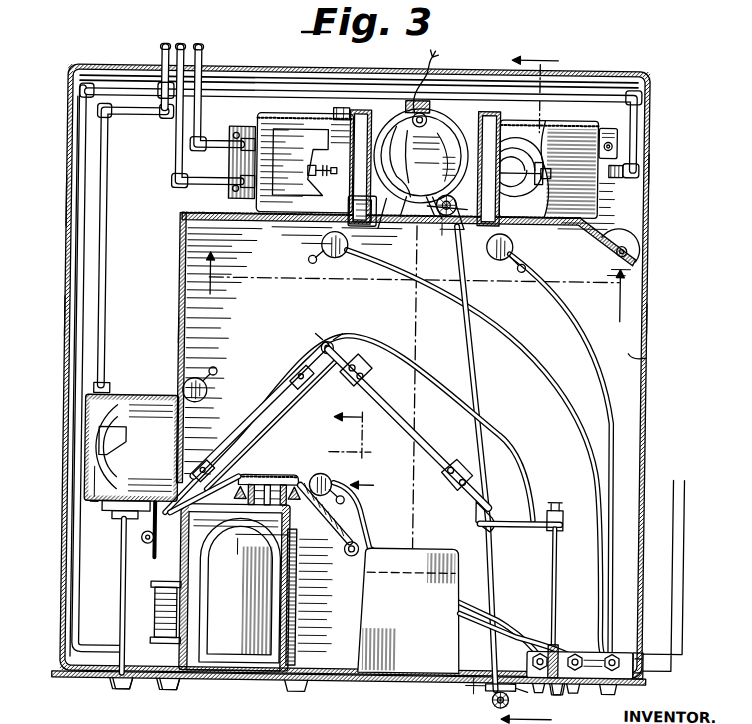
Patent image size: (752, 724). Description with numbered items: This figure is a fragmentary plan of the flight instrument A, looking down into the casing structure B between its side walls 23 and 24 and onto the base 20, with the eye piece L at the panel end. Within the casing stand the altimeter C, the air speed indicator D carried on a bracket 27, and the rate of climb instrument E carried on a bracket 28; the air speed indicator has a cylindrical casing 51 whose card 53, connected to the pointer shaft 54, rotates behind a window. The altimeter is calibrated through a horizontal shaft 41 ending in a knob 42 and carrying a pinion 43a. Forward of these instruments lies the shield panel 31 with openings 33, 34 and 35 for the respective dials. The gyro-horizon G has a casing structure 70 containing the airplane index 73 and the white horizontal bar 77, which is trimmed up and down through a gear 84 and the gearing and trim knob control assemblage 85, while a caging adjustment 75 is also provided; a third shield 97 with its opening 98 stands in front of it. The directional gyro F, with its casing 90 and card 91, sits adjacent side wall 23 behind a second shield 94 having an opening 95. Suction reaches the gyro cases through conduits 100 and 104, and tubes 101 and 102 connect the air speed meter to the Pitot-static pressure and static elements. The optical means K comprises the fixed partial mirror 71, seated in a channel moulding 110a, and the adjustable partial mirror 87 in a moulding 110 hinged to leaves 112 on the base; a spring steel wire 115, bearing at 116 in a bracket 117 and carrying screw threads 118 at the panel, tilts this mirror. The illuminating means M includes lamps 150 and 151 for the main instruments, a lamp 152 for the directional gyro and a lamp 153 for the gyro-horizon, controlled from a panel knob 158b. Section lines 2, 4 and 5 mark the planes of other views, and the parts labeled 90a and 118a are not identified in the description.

The flight instrument A is at (60, 81).
The casing structure B is at (60, 206).
The altimeter C is at (426, 129).
The air speed indicator D is at (279, 127).
The rate of climb instrument E is at (553, 125).
The directional gyro F is at (84, 413).
The gyro-horizon G is at (245, 655).
The optical means K is at (378, 401).
The eye piece L is at (391, 660).
The illuminating means M is at (595, 252).
The section line 2 is at (413, 297).
The section line 4 is at (538, 387).
The section line 5 is at (373, 387).
The base 20 is at (646, 354).
The side wall 23 is at (59, 322).
The side wall 24 is at (647, 318).
The bracket 27 is at (230, 162).
The bracket 28 is at (614, 134).
The shield panel 31 is at (262, 228).
The opening 33 is at (372, 232).
The opening 34 is at (474, 247).
The opening 35 is at (440, 237).
The shaft 41 is at (467, 372).
The knob 42 is at (492, 710).
The pinion 43a is at (478, 695).
The casing 51 is at (246, 200).
The card 53 is at (341, 116).
The pointer shaft 54 is at (321, 179).
The casing structure 70 is at (243, 625).
The partial mirror 71 is at (278, 419).
The airplane index 73 is at (222, 525).
The caging adjustment 75 is at (173, 691).
The white horizontal bar 77 is at (190, 546).
The gear 84 is at (238, 480).
The gearing and trim knob control assemblage 85 is at (305, 573).
The partial mirror 87 is at (399, 428).
The casing 90 is at (134, 415).
The foot 90a is at (122, 686).
The card 91 is at (82, 498).
The second shield 94 is at (186, 335).
The opening 95 is at (176, 443).
The third shield 97 is at (279, 474).
The opening 98 is at (243, 482).
The conduit 100 is at (72, 588).
The tube 101 is at (177, 51).
The tube 102 is at (199, 54).
The conduit 104 is at (103, 282).
The moulding 110 is at (426, 447).
The channel moulding 110a is at (268, 400).
The leaves 112 is at (360, 374).
The spring steel wire 115 is at (559, 594).
The bearing 116 is at (559, 510).
The bracket 117 is at (510, 524).
The screw threads 118 is at (561, 652).
The foot 118a is at (571, 690).
The lamp 150 is at (334, 260).
The lamp 151 is at (502, 258).
The lamp 152 is at (200, 384).
The lamp 153 is at (325, 471).
The knob 158b is at (627, 686).